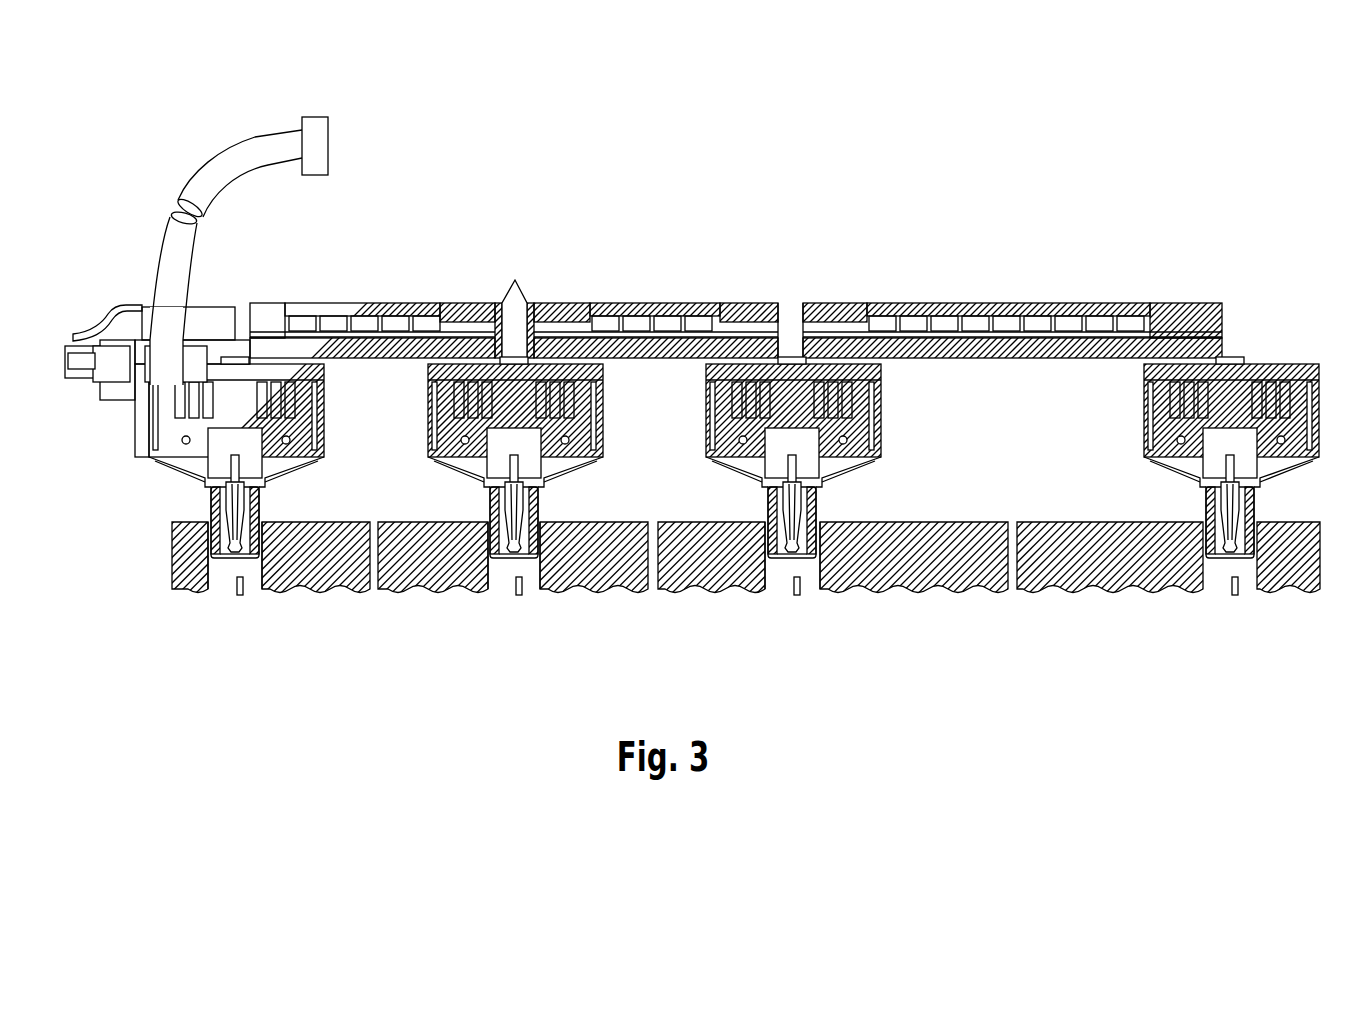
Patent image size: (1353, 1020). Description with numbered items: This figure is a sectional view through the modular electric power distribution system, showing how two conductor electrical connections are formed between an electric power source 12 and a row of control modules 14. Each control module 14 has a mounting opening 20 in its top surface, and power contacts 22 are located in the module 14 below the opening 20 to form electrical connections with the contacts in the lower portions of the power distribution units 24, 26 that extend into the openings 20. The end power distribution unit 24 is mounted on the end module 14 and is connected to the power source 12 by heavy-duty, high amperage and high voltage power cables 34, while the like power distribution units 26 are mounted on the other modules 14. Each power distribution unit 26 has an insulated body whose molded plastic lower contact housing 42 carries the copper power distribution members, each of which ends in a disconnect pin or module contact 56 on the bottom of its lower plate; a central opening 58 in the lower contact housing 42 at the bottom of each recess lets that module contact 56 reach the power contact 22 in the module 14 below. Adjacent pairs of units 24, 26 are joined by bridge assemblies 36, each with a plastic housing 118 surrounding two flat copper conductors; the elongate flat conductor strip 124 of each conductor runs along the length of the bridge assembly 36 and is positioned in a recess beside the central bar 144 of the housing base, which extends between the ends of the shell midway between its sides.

The electric power source 12 is at (330, 128).
The control module 14 is at (172, 562).
The mounting opening 20 is at (262, 586).
The power contact 22 is at (250, 585).
The end power distribution unit 24 is at (165, 463).
The power distribution unit 26 is at (700, 418).
The power cable 34 is at (219, 154).
The bridge assembly 36 is at (360, 292).
The lower contact housing 42 is at (742, 474).
The module contact 56 is at (249, 530).
The central opening 58 is at (238, 562).
The plastic housing 118 is at (504, 302).
The conductor strip 124 is at (400, 336).
The central bar 144 is at (357, 356).